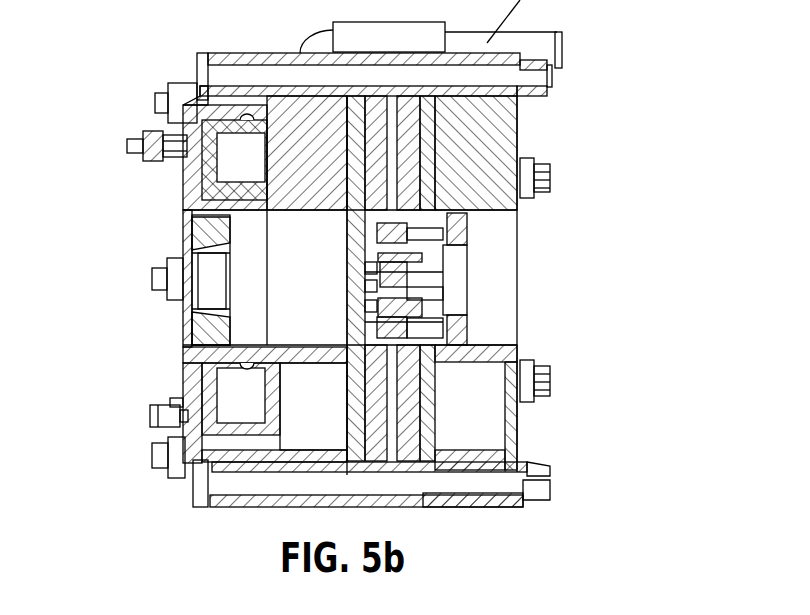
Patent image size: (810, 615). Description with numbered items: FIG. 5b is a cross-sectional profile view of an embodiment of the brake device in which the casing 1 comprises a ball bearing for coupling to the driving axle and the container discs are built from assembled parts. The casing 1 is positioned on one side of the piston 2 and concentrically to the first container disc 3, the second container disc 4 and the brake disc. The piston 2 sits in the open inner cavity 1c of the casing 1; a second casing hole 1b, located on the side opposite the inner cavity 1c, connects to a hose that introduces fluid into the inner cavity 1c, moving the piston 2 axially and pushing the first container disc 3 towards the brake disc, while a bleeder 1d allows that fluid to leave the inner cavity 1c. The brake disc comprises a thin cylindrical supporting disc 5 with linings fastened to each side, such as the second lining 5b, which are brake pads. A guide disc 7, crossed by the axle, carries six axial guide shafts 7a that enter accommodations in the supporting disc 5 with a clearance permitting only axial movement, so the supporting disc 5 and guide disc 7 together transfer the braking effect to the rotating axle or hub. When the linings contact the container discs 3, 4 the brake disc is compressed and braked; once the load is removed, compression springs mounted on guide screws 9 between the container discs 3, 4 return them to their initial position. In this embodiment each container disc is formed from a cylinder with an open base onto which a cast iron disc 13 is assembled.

The casing 1 is at (195, 107).
The second casing hole 1b is at (150, 425).
The inner cavity 1c is at (233, 397).
The bleeder 1d is at (130, 138).
The piston 2 is at (210, 172).
The first container disc 3 is at (310, 422).
The second container disc 4 is at (497, 135).
The supporting disc 5 is at (467, 335).
The second lining 5b is at (418, 395).
The guide disc 7 is at (458, 233).
The guide shafts 7a is at (423, 292).
The guide screws 9 is at (472, 485).
The cast iron disc 13 is at (358, 430).